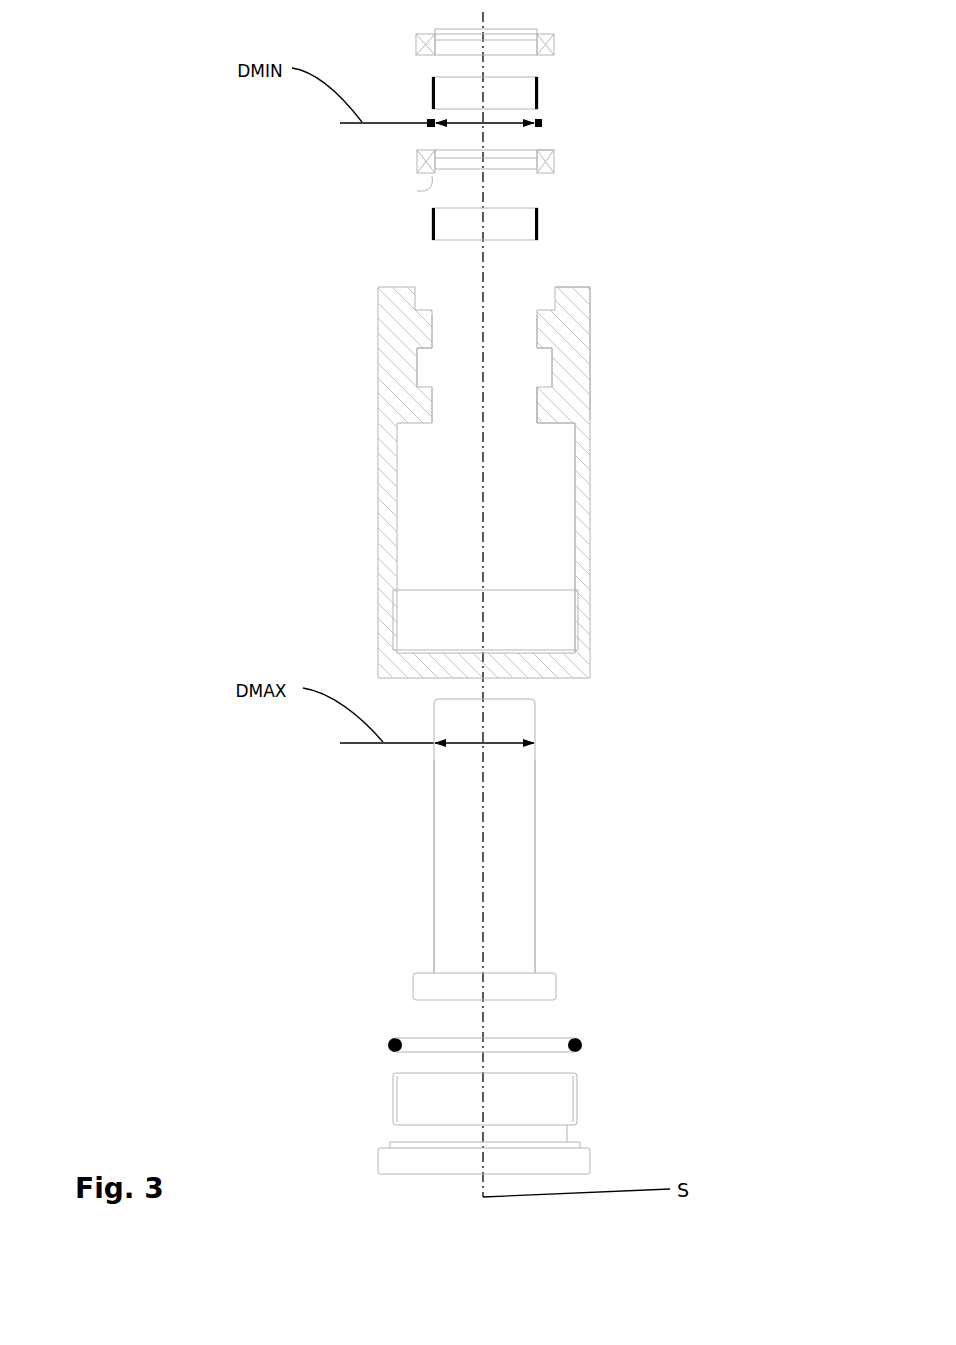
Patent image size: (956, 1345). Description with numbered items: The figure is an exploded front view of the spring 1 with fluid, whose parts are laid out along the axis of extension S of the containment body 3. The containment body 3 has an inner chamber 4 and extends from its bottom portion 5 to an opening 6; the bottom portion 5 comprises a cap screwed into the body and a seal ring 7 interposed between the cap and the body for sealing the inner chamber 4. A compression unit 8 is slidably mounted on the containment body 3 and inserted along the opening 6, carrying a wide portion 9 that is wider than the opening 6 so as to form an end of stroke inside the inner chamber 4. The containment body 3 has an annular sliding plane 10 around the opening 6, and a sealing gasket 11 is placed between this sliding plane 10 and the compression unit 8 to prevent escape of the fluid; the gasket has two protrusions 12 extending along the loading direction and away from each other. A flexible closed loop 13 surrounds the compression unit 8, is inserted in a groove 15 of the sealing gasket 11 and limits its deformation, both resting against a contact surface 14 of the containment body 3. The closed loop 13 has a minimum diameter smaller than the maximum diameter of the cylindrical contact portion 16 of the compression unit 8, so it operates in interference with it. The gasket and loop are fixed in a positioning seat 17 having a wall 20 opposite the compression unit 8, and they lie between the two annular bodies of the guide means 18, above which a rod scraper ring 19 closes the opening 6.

The spring with fluid 1 is at (155, 117).
The containment body 3 is at (563, 367).
The inner chamber 4 is at (563, 543).
The bottom portion 5 is at (600, 1126).
The opening 6 is at (518, 278).
The seal ring 7 is at (545, 1045).
The compression unit 8 is at (520, 815).
The wide portion 9 is at (548, 985).
The sliding plane 10 is at (437, 408).
The sealing gasket 11 is at (417, 165).
The protrusions 12 is at (427, 177).
The closed loop 13 is at (542, 122).
The contact surface 14 is at (435, 360).
The groove 15 is at (537, 151).
The contact portion 16 is at (433, 875).
The positioning seat 17 is at (502, 380).
The guide means 18 is at (420, 93).
The rod scraper ring 19 is at (563, 45).
The wall 20 is at (415, 365).